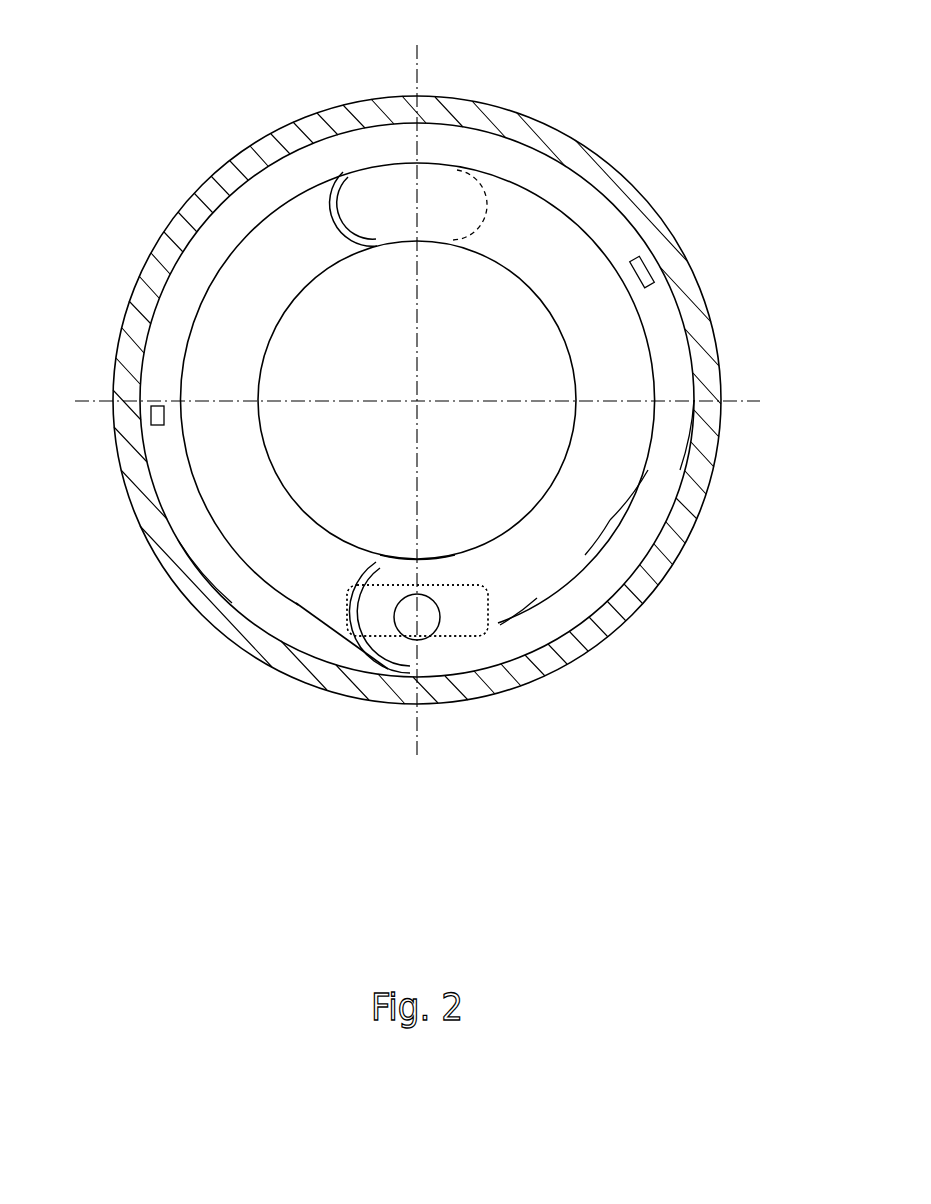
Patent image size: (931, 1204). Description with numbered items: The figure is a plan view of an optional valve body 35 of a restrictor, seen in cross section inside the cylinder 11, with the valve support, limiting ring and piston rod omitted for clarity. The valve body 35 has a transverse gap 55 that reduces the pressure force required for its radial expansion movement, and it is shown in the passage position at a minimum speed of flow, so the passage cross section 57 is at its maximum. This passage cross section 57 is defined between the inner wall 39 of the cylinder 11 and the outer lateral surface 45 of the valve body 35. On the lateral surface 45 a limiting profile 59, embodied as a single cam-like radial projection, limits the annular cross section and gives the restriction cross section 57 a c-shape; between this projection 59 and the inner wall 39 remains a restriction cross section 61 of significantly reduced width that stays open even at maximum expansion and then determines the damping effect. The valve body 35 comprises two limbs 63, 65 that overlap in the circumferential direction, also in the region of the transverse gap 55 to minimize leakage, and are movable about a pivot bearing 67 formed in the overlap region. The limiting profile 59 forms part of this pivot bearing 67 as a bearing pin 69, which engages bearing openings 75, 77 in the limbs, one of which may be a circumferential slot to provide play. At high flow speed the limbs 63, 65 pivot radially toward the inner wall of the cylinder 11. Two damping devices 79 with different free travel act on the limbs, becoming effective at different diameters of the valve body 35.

The cylinder 11 is at (229, 624).
The valve body 35 is at (212, 560).
The inner wall 39 is at (681, 458).
The outer lateral surface 45 is at (655, 513).
The transverse gap 55 is at (335, 193).
The passage cross section 57 is at (622, 552).
The limiting profile 59 is at (486, 630).
The restriction cross section 61 is at (397, 678).
The limb 63 is at (224, 330).
The limb 65 is at (614, 354).
The pivot bearing 67 is at (432, 540).
The bearing pin 69 is at (424, 624).
The bearing opening 75 is at (376, 651).
The bearing opening 77 is at (376, 651).
The damping device 79 is at (648, 272).